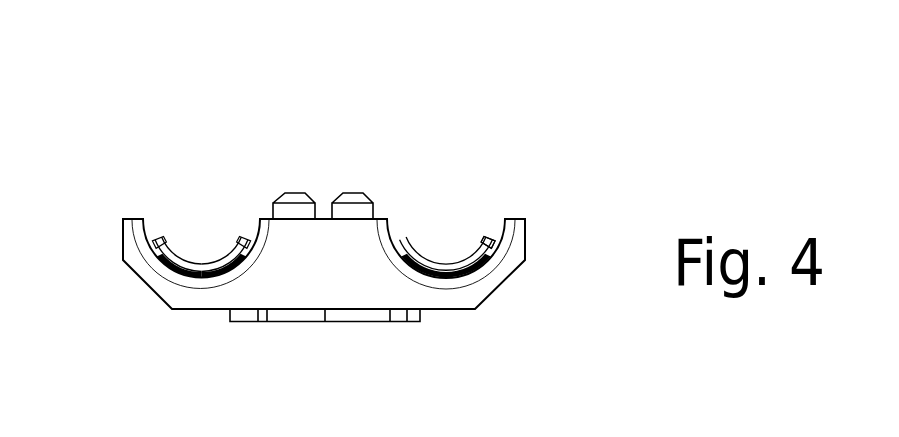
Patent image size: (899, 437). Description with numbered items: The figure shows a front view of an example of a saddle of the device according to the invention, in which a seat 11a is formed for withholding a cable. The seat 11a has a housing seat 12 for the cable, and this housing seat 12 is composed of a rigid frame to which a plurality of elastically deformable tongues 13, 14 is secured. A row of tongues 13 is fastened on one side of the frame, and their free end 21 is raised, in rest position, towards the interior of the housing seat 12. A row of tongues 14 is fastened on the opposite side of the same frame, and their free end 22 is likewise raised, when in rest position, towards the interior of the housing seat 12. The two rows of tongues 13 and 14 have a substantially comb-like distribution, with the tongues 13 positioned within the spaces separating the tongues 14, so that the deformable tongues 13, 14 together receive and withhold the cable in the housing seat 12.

The seat 11a is at (518, 248).
The housing seat 12 is at (208, 228).
The tongues 13 is at (163, 238).
The tongues 14 is at (232, 239).
The free end 21 is at (158, 243).
The free end 22 is at (244, 238).